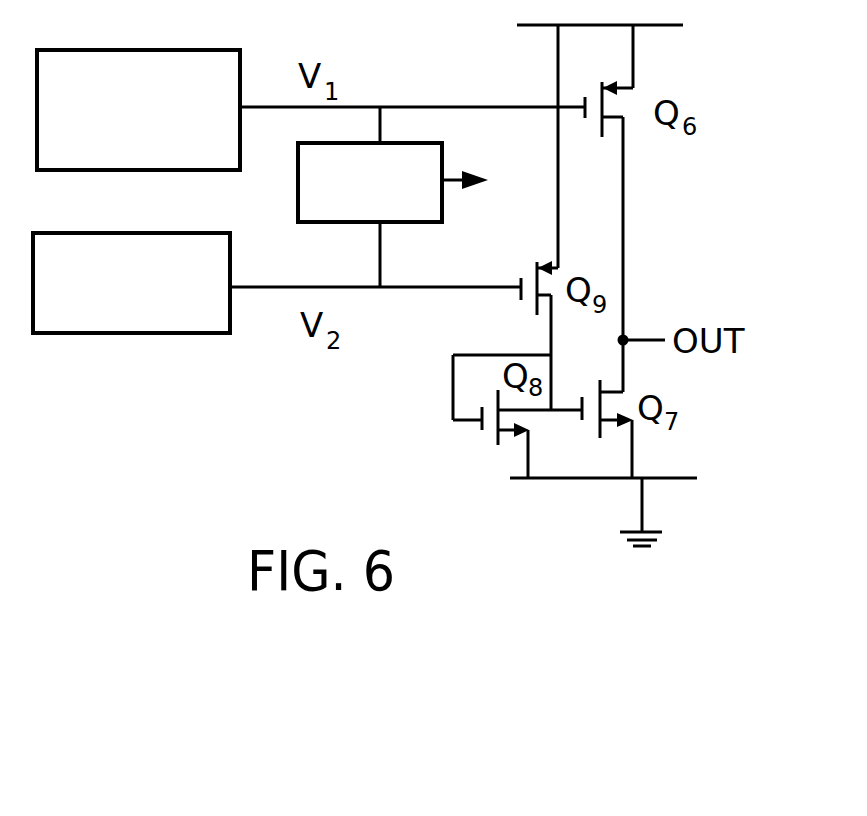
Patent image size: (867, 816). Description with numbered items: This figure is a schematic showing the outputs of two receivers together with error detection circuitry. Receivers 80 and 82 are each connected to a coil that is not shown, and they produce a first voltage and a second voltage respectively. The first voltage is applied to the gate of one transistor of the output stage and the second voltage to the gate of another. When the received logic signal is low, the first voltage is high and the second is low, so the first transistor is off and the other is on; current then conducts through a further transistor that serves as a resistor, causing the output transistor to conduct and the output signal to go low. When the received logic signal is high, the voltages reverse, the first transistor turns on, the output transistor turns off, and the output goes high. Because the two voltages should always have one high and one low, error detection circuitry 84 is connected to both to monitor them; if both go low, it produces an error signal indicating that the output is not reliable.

The receiver 80 is at (155, 50).
The receiver 82 is at (155, 233).
The error detection circuitry 84 is at (443, 170).